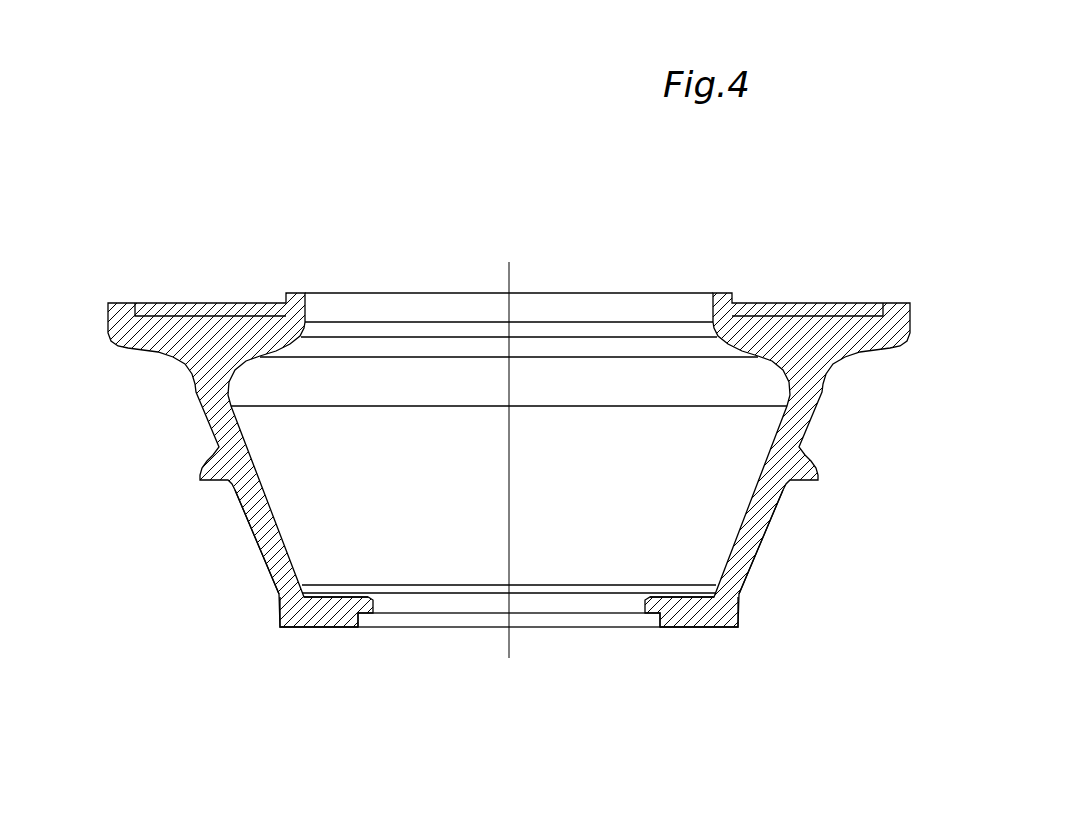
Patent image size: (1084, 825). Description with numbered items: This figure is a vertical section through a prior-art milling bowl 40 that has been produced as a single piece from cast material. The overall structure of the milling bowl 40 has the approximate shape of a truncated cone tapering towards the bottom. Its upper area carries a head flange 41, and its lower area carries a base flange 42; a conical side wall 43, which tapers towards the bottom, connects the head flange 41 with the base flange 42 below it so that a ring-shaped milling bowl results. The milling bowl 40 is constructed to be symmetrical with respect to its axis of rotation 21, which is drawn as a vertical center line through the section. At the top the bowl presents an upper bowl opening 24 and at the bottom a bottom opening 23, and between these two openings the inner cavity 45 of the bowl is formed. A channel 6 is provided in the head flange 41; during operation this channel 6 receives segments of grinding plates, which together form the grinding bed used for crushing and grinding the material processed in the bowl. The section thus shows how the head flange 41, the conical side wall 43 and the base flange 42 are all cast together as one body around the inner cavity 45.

The milling bowl 40 is at (388, 208).
The channel 6 is at (207, 312).
The head flange 41 is at (162, 337).
The upper bowl opening 24 is at (333, 297).
The axis of rotation 21 is at (512, 285).
The conical side wall 43 is at (270, 537).
The inner cavity 45 is at (567, 493).
The bottom opening 23 is at (462, 603).
The base flange 42 is at (683, 612).